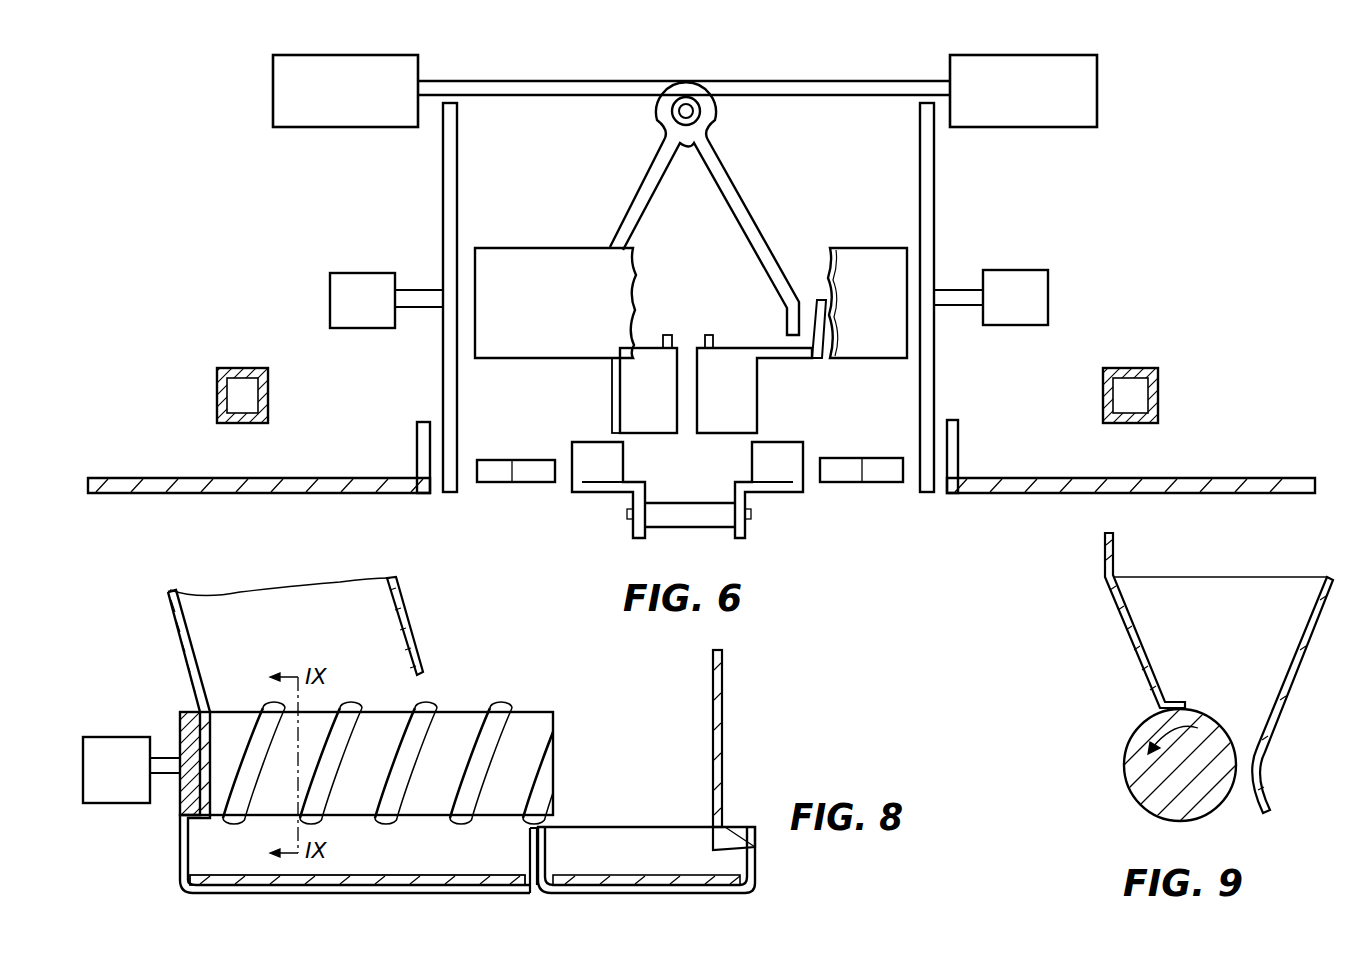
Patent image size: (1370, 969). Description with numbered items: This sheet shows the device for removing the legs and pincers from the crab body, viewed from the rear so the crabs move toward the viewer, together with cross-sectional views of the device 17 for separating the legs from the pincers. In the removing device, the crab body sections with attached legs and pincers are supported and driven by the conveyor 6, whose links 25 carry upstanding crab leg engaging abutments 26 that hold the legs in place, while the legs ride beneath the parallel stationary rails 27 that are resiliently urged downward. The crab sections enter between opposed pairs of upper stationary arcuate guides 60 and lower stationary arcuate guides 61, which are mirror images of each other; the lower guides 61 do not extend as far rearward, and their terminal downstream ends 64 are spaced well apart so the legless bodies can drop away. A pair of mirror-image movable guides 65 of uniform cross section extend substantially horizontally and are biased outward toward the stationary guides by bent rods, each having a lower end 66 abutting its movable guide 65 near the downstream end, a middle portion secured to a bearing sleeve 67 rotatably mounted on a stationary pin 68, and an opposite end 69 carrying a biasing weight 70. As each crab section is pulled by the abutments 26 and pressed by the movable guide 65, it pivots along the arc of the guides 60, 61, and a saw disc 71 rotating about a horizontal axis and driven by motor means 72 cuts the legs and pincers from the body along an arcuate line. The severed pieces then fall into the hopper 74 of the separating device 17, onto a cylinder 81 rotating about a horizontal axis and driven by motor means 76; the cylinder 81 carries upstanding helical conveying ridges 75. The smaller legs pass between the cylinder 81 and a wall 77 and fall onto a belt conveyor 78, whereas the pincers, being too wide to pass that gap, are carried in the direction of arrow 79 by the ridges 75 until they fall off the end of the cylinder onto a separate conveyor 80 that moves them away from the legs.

In FIG. 6, the conveyor 6 is at (765, 533).
In FIG. 8, the device for separating the legs from the pincers 17 is at (735, 740).
In FIG. 9, the device for separating the legs from the pincers 17 is at (1302, 689).
In FIG. 6, the links 25 is at (188, 478).
In FIG. 6, the crab leg engaging abutments 26 is at (418, 440).
In FIG. 6, the stationary rails 27 is at (225, 370).
In FIG. 6, the upper stationary arcuate guides 60 is at (563, 260).
In FIG. 6, the lower stationary arcuate guides 61 is at (495, 472).
In FIG. 6, the terminal downstream ends 64 is at (515, 472).
In FIG. 6, the movable guides 65 is at (629, 402).
In FIG. 6, the lower end of bent rod 66 is at (638, 212).
In FIG. 6, the bearing sleeve 67 is at (697, 101).
In FIG. 6, the stationary pin 68 is at (681, 106).
In FIG. 6, the opposite end of bent rod 69 is at (540, 80).
In FIG. 6, the biasing weight 70 is at (330, 100).
In FIG. 6, the saw disc 71 is at (443, 185).
In FIG. 6, the motor means 72 is at (336, 276).
In FIG. 8, the hopper 74 is at (386, 639).
In FIG. 9, the hopper 74 is at (1230, 612).
In FIG. 8, the helical conveying ridges 75 is at (452, 822).
In FIG. 8, the motor means 76 is at (130, 737).
In FIG. 8, the wall 77 is at (238, 643).
In FIG. 9, the wall 77 is at (1253, 764).
In FIG. 8, the belt conveyor 78 is at (367, 870).
In FIG. 8, the arrow 79 is at (392, 665).
In FIG. 8, the conveyor 80 is at (645, 875).
In FIG. 8, the cylinder 81 is at (226, 776).
In FIG. 9, the cylinder 81 is at (1135, 752).